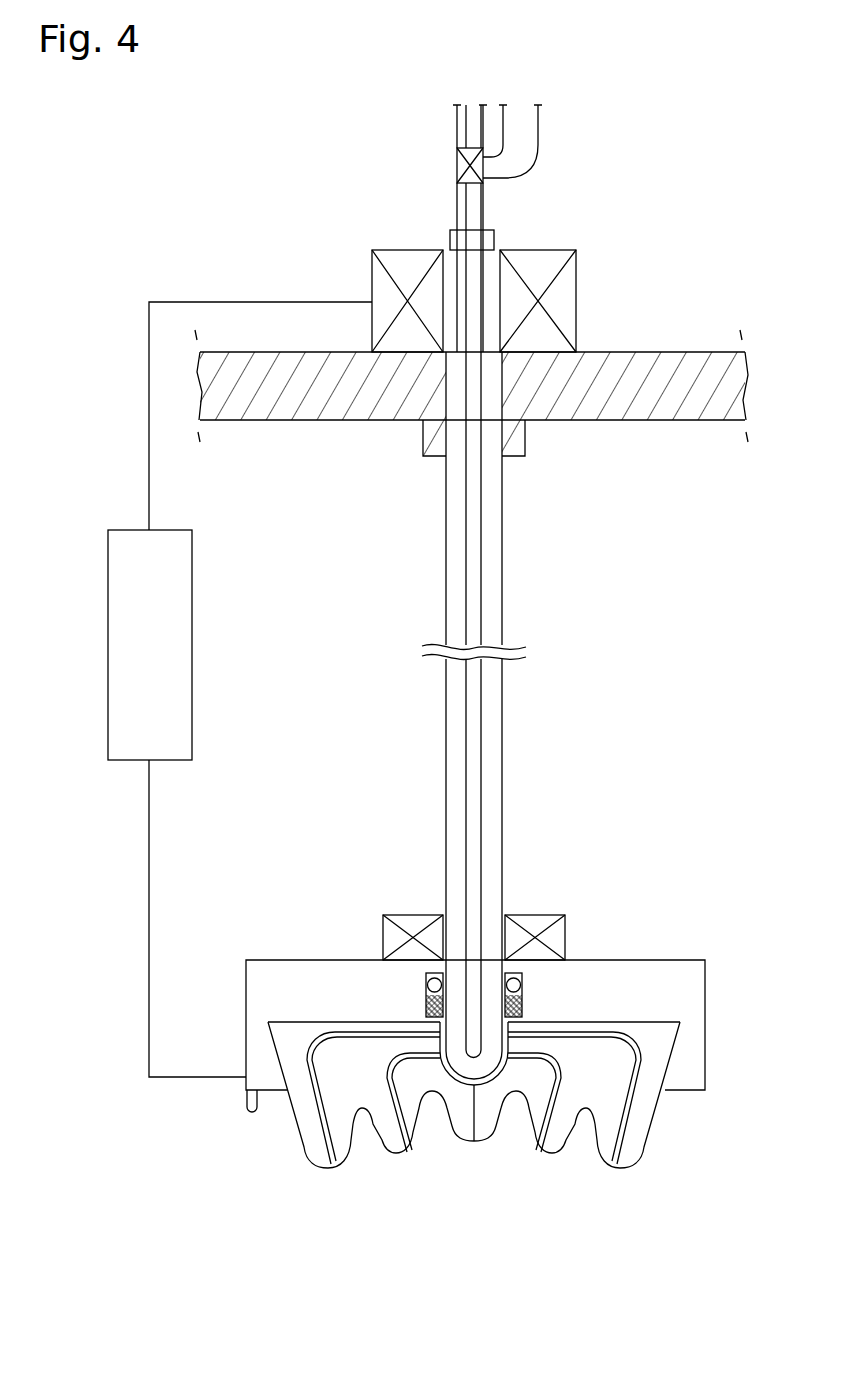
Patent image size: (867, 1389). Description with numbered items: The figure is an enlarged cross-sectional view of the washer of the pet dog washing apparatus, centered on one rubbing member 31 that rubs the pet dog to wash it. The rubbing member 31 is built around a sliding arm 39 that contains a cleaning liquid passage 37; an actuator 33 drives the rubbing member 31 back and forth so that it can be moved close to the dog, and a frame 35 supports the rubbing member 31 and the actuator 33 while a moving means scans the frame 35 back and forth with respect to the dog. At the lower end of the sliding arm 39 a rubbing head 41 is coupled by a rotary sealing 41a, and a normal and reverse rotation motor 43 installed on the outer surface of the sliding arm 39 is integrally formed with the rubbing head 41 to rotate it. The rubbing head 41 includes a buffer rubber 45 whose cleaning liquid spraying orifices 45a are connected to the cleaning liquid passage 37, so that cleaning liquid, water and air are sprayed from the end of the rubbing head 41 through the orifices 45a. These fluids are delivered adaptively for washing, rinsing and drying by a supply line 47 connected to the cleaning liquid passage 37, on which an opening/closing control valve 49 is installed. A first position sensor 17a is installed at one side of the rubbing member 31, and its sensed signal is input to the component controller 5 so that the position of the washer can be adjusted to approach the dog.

The component controller 5 is at (108, 590).
The first position sensor 17a is at (247, 1108).
The rubbing member 31 is at (733, 1062).
The actuator 33 is at (576, 303).
The frame 35 is at (607, 421).
The cleaning liquid passage 37 is at (473, 568).
The sliding arm 39 is at (494, 731).
The rubbing head 41 is at (705, 985).
The rotary sealing 41a is at (527, 993).
The normal and reverse rotation motor 43 is at (412, 915).
The buffer rubber 45 is at (640, 1140).
The cleaning liquid spraying orifices 45a is at (543, 1152).
The supply line 47 is at (483, 200).
The opening/closing control valve 49 is at (428, 180).